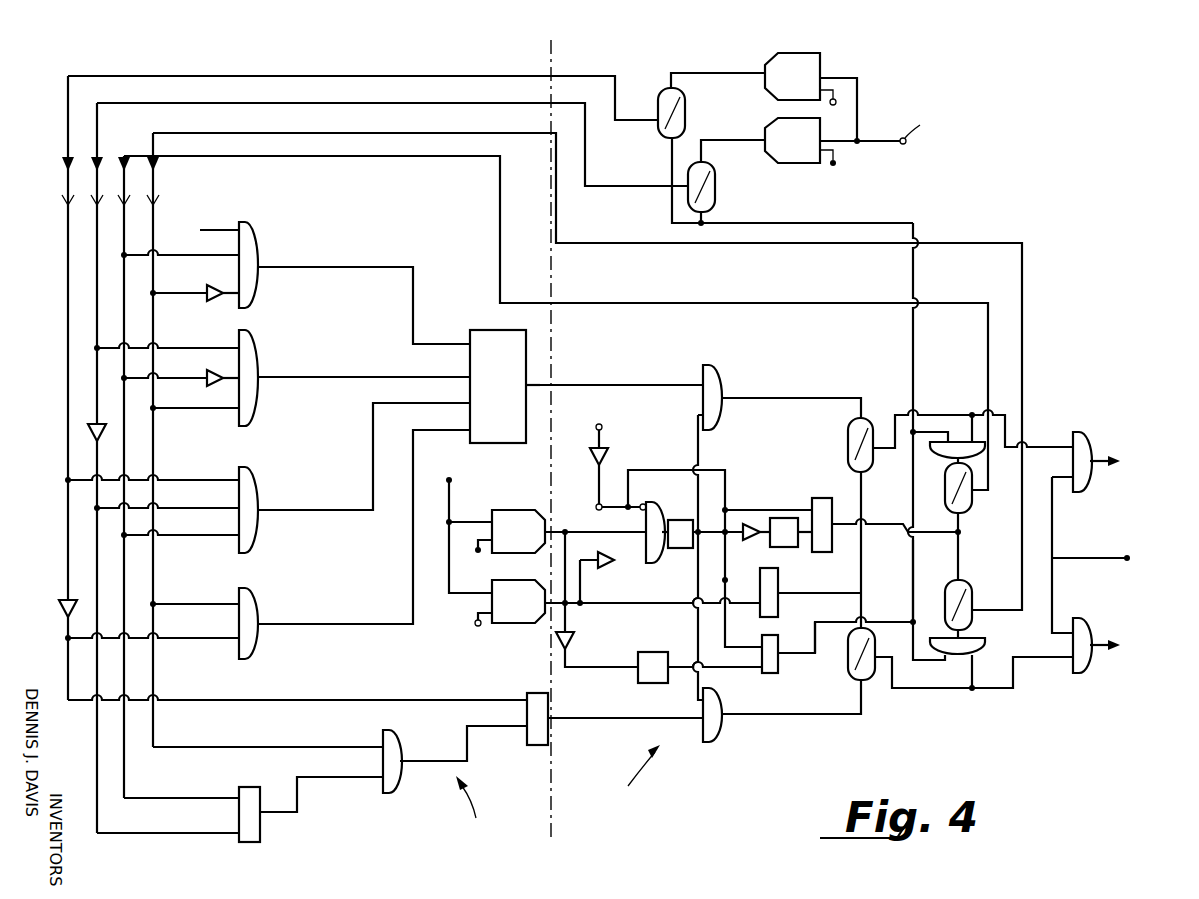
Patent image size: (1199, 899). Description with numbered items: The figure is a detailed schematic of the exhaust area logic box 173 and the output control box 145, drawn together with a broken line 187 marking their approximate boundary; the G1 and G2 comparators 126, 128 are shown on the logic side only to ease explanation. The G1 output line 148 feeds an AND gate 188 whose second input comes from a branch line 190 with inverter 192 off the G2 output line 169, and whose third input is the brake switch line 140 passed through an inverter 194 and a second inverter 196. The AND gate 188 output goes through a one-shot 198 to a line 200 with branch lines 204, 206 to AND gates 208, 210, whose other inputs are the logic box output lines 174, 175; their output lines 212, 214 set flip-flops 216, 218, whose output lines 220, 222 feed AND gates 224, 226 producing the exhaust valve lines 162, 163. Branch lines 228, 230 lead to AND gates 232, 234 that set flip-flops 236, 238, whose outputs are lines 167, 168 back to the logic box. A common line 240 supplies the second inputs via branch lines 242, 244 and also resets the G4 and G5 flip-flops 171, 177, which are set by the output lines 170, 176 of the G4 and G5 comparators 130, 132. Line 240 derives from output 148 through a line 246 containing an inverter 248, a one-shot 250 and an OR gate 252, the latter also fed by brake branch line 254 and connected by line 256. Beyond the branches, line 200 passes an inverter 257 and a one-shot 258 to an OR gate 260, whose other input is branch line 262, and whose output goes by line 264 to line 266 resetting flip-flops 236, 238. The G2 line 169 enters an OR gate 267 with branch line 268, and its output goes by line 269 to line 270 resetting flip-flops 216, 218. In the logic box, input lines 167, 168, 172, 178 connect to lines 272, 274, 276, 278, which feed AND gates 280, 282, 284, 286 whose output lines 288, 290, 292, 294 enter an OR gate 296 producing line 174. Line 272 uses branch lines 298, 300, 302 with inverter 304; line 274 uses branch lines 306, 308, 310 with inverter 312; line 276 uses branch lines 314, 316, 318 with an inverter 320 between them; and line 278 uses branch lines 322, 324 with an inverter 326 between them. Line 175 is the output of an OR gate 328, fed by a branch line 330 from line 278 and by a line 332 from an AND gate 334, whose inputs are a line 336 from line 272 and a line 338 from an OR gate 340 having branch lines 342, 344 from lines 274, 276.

The G1 comparator 126 is at (536, 508).
The G2 comparator 128 is at (520, 625).
The G4 comparator 130 is at (822, 63).
The G5 comparator 132 is at (805, 164).
The brake switch line 140 is at (604, 432).
The output control box 145 is at (620, 774).
The output line of G1 comparator 148 is at (600, 530).
The output line of AND gate 224 162 is at (1098, 468).
The output line of AND gate 226 163 is at (1096, 640).
The output line of flip-flop 236 167 is at (797, 303).
The output line of flip-flop 238 168 is at (1022, 310).
The output line of G2 comparator 169 is at (660, 605).
The output line of G4 comparator 170 is at (742, 72).
The G4 flip-flop 171 is at (686, 108).
The input line from G4 comparator 172 is at (497, 70).
The exhaust area logic box 173 is at (485, 805).
The logic box output line 174 is at (646, 384).
The second logic box output line 175 is at (575, 722).
The output line of G5 comparator 176 is at (748, 140).
The G5 flip-flop 177 is at (718, 195).
The input line from G5 comparator 178 is at (645, 186).
The broken line 187 is at (565, 330).
The AND gate 188 is at (658, 565).
The branch line 190 is at (582, 582).
The inverter 192 is at (612, 548).
The inverter 194 is at (590, 462).
The second inverter 196 is at (645, 505).
The one-shot 198 is at (684, 548).
The line 200 is at (748, 545).
The branch line 204 is at (700, 446).
The branch line 206 is at (696, 660).
The AND gate 208 is at (716, 364).
The AND gate 210 is at (720, 742).
The output line of AND gate 208 212 is at (820, 397).
The output line of AND gate 210 214 is at (800, 716).
The flip-flop 216 is at (852, 426).
The flip-flop 218 is at (866, 684).
The output line of flip-flop 216 220 is at (930, 413).
The output line of flip-flop 218 222 is at (936, 690).
The AND gate 224 is at (1088, 437).
The AND gate 226 is at (1083, 674).
The branch line 228 is at (972, 413).
The branch line 230 is at (975, 690).
The AND gate 232 is at (982, 440).
The AND gate 234 is at (986, 642).
The flip-flop 236 is at (973, 506).
The flip-flop 238 is at (972, 590).
The common line 240 is at (905, 622).
The branch line 242 is at (905, 413).
The branch line 244 is at (940, 664).
The line 246 is at (574, 640).
The inverter 248 is at (558, 648).
The one-shot 250 is at (636, 680).
The OR gate 252 is at (786, 672).
The branch line 254 is at (678, 470).
The line 256 is at (836, 624).
The inverter 257 is at (765, 510).
The one-shot 258 is at (790, 548).
The OR gate 260 is at (826, 497).
The branch line 262 is at (785, 508).
The line 264 is at (913, 548).
The line 266 is at (962, 548).
The OR gate 267 is at (796, 637).
The branch line 268 is at (766, 605).
The line 269 is at (830, 594).
The line 270 is at (870, 525).
The line 272 is at (153, 212).
The line 274 is at (124, 220).
The line 276 is at (97, 312).
The line 278 is at (68, 271).
The AND gate 280 is at (262, 238).
The AND gate 282 is at (262, 346).
The AND gate 284 is at (262, 494).
The AND gate 286 is at (262, 602).
The output line of AND gate 280 288 is at (355, 266).
The output line of AND gate 282 290 is at (393, 376).
The output line of AND gate 284 292 is at (372, 440).
The output line of AND gate 286 294 is at (412, 580).
The OR gate 296 is at (486, 328).
The branch line 298 is at (205, 293).
The branch line 300 is at (205, 407).
The branch line 302 is at (208, 602).
The inverter 304 is at (212, 302).
The branch line 306 is at (208, 256).
The branch line 308 is at (203, 377).
The branch line 310 is at (208, 534).
The inverter 312 is at (222, 375).
The branch line 314 is at (186, 228).
The branch line 316 is at (208, 346).
The branch line 318 is at (208, 507).
The inverter 320 is at (90, 432).
The branch line 322 is at (205, 479).
The branch line 324 is at (214, 636).
The inverter 326 is at (60, 612).
The OR gate 328 is at (538, 748).
The branch line 330 is at (487, 699).
The line 332 is at (493, 728).
The AND gate 334 is at (396, 796).
The line 336 is at (300, 746).
The line 338 is at (338, 780).
The OR gate 340 is at (262, 835).
The branch line 342 is at (215, 797).
The branch line 344 is at (196, 832).